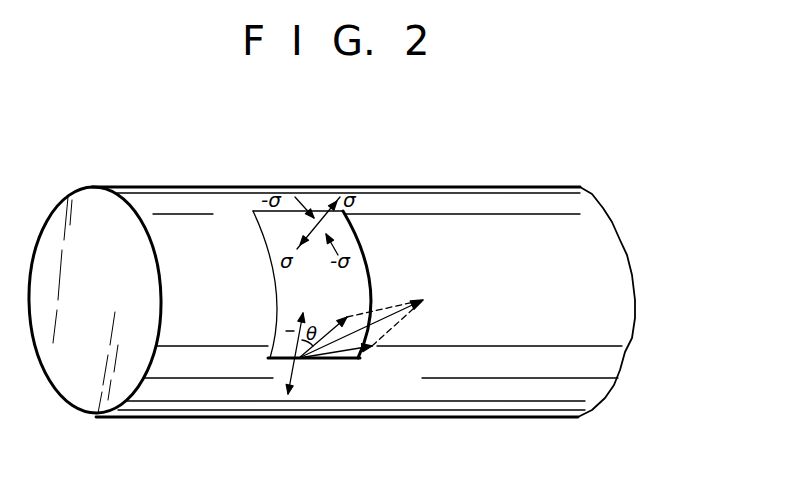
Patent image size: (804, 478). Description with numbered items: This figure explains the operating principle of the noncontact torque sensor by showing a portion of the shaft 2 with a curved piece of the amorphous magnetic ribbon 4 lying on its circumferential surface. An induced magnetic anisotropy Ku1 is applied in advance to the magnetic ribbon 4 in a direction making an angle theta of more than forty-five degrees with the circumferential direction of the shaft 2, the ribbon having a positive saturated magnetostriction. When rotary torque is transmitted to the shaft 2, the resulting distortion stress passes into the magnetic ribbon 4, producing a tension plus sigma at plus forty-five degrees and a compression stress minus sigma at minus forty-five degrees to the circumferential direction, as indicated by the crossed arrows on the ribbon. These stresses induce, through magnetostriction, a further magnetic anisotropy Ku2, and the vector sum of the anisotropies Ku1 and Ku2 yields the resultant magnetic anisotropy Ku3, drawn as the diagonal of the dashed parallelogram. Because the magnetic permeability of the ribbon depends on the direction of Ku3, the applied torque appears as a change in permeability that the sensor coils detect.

The shaft 2 is at (513, 200).
The amorphous magnetic ribbon 4 is at (276, 310).
The induced magnetic anisotropy Ku1 is at (345, 358).
The magnetic anisotropy induced by magnetostriction Ku2 is at (333, 324).
The resultant magnetic anisotropy Ku3 is at (405, 299).